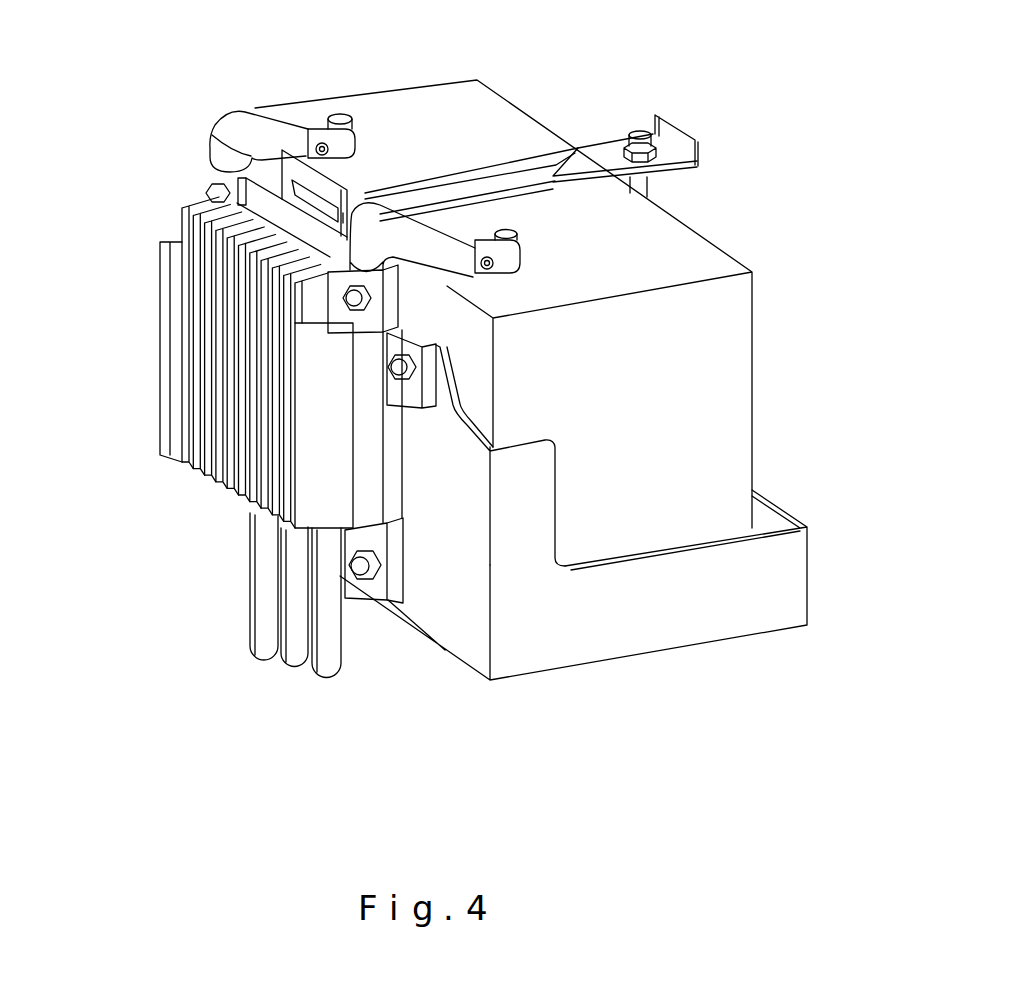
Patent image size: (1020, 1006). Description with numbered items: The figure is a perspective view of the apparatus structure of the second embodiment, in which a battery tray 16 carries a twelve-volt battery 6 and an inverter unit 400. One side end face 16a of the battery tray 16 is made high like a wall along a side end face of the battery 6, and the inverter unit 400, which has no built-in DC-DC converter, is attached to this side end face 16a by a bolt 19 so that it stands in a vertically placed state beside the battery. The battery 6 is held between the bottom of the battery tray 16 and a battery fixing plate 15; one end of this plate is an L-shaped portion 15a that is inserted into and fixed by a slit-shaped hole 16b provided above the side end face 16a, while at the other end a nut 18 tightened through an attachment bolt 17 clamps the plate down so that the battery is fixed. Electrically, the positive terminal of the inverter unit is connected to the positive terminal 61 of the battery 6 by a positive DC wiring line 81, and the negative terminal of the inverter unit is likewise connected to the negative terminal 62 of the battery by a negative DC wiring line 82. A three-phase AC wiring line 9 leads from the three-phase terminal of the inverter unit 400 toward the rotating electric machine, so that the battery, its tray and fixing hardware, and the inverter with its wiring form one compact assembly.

The inverter unit 400 is at (157, 325).
The 12V battery 6 is at (742, 407).
The three-phase AC wiring line 9 is at (334, 706).
The battery fixing plate 15 is at (667, 162).
The L-shaped portion 15a is at (212, 133).
The battery tray 16 is at (798, 572).
The side end face 16a is at (435, 430).
The slit-shaped hole 16b is at (353, 195).
The attachment bolt 17 is at (652, 190).
The nut 18 is at (624, 136).
The bolt 19 is at (400, 365).
The positive terminal 61 is at (505, 233).
The negative terminal 62 is at (352, 119).
The positive DC wiring line 81 is at (425, 238).
The negative DC wiring line 82 is at (234, 117).